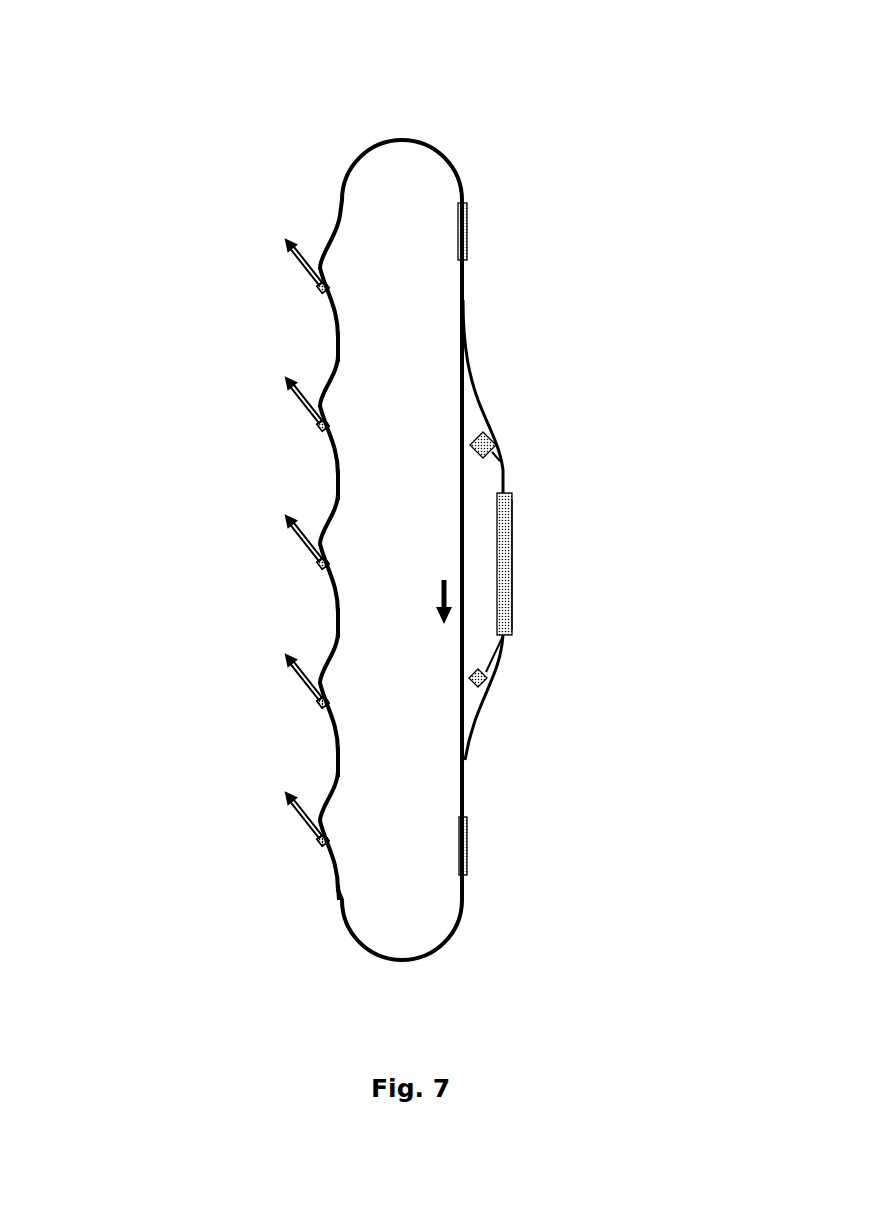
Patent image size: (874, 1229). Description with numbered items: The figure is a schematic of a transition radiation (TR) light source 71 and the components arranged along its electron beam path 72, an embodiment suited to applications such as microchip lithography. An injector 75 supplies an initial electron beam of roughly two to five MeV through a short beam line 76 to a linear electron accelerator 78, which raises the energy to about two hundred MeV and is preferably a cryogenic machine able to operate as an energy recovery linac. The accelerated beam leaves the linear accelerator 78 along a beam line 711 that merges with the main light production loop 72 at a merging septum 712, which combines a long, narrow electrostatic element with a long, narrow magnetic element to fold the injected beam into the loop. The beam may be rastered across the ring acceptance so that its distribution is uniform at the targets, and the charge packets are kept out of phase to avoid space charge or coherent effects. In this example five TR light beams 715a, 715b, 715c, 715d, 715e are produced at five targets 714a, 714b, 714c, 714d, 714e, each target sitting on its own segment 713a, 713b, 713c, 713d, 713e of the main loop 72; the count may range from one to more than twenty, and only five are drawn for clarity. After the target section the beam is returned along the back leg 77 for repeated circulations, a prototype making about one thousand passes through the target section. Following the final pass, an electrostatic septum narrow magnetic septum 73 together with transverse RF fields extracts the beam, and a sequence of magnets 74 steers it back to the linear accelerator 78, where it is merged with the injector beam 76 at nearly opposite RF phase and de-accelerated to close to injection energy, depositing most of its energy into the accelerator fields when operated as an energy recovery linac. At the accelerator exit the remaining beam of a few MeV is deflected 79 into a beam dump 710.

The TR light source 71 is at (303, 127).
The electron beam path 72 is at (448, 158).
The electrostatic septum narrow magnetic septum 73 is at (467, 220).
The sequence of magnets 74 is at (476, 387).
The injector 75 is at (497, 436).
The short beam line 76 is at (503, 465).
The back leg 77 is at (513, 510).
The linear electron accelerator 78 is at (512, 553).
The deflection 79 is at (500, 665).
The beam dump 710 is at (490, 692).
The beam line 711 is at (480, 718).
The merging septum 712 is at (467, 850).
The segment 713a is at (334, 890).
The segment 713b is at (334, 752).
The segment 713c is at (334, 613).
The segment 713d is at (334, 475).
The segment 713e is at (334, 337).
The TR light production target 714a is at (328, 843).
The TR light production target 714b is at (328, 705).
The TR light production target 714c is at (328, 566).
The TR light production target 714d is at (328, 428).
The TR light production target 714e is at (328, 290).
The TR light beam 715a is at (283, 806).
The TR light beam 715b is at (283, 668).
The TR light beam 715c is at (283, 529).
The TR light beam 715d is at (283, 391).
The TR light beam 715e is at (283, 253).